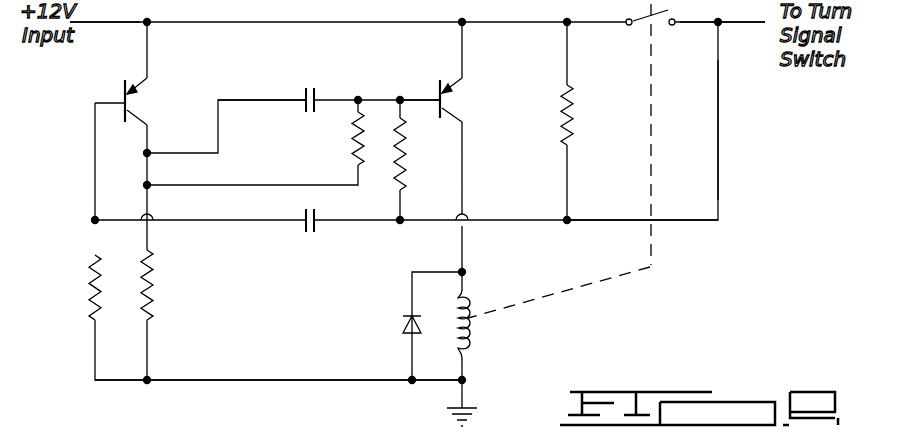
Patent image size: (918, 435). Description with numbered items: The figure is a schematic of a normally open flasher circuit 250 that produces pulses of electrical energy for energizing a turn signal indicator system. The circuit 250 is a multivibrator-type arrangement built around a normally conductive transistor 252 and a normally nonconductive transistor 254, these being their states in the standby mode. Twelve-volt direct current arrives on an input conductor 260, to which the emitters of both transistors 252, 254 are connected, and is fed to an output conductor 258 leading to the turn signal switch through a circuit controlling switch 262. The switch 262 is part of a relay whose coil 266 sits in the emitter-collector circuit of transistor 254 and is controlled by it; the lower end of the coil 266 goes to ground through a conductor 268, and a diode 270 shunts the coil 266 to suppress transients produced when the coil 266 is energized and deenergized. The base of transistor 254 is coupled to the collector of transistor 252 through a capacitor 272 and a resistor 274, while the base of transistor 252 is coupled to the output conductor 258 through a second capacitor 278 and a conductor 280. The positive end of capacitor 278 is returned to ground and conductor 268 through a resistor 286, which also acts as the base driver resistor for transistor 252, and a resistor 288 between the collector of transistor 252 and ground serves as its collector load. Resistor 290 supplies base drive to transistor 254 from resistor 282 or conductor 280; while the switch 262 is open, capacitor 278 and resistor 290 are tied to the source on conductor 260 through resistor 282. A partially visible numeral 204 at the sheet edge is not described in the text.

The flasher circuit 250 is at (322, 66).
The normally conductive transistor 252 is at (192, 92).
The normally nonconductive transistor 254 is at (444, 106).
The output conductor 258 is at (755, 24).
The input conductor 260 is at (122, 25).
The circuit controlling switch 262 is at (657, 27).
The coil 266 is at (470, 334).
The conductor 268 is at (464, 393).
The diode 270 is at (403, 326).
The capacitor 272 is at (301, 116).
The resistor 274 is at (356, 153).
The second capacitor 278 is at (309, 237).
The conductor 280 is at (718, 128).
The resistor 282 is at (569, 117).
The resistor 286 is at (95, 290).
The resistor 288 is at (149, 266).
The resistor 290 is at (402, 170).
The circuit 204 is at (278, 407).